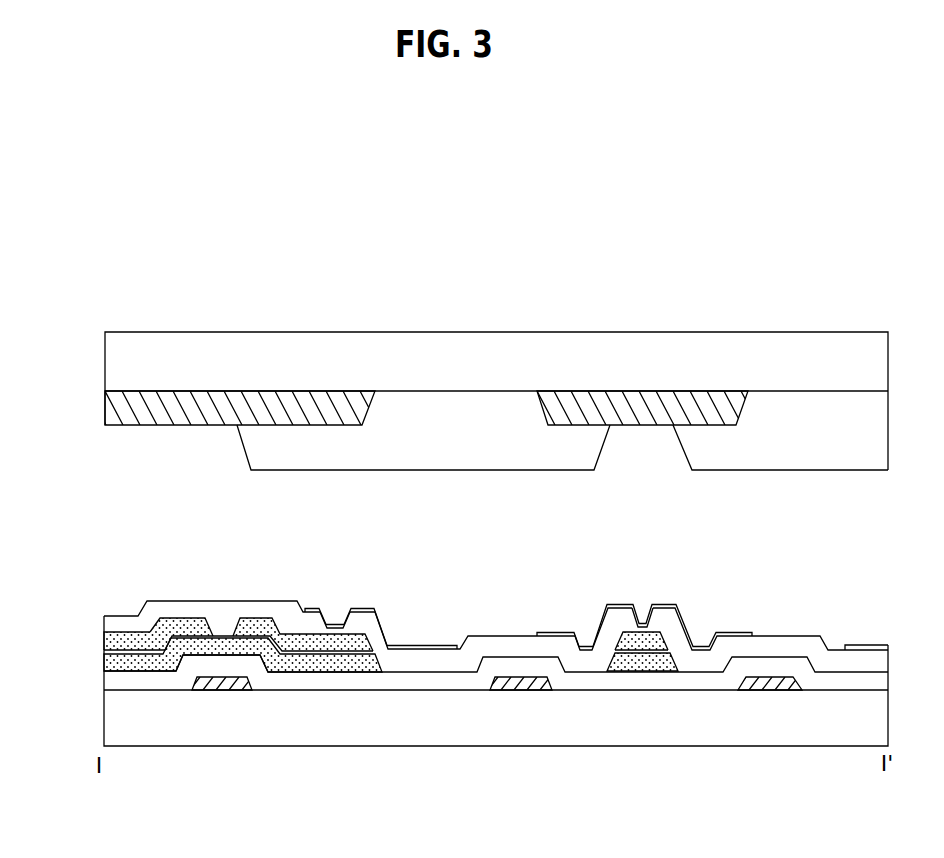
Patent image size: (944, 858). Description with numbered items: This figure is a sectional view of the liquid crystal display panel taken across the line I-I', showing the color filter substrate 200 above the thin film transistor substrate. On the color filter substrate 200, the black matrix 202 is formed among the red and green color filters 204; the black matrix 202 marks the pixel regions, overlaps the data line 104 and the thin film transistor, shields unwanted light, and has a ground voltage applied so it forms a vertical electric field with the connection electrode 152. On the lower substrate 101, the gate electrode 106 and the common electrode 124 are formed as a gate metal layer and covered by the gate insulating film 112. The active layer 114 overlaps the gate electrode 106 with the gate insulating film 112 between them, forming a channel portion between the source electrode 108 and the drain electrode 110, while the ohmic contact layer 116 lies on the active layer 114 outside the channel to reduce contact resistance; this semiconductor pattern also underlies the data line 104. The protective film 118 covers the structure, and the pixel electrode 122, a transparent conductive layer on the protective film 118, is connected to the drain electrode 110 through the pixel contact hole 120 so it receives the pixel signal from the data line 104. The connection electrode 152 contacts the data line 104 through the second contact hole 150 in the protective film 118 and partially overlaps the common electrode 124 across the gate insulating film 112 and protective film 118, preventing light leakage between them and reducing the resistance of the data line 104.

The substrate 101 is at (115, 725).
The data line 104 is at (127, 638).
The gate electrode 106 is at (230, 683).
The source electrode 108 is at (183, 625).
The drain electrode 110 is at (262, 625).
The gate insulating film 112 is at (122, 680).
The active layer 114 is at (145, 663).
The ohmic contact layer 116 is at (308, 652).
The protective film 118 is at (115, 623).
The pixel contact hole 120 is at (335, 626).
The pixel electrode 122 is at (370, 611).
The common electrode 124 is at (518, 681).
The second contact hole 150 is at (646, 606).
The connection electrode 152 is at (641, 625).
The color filter substrate 200 is at (708, 350).
The black matrix 202 is at (600, 398).
The color filter 204 is at (415, 407).